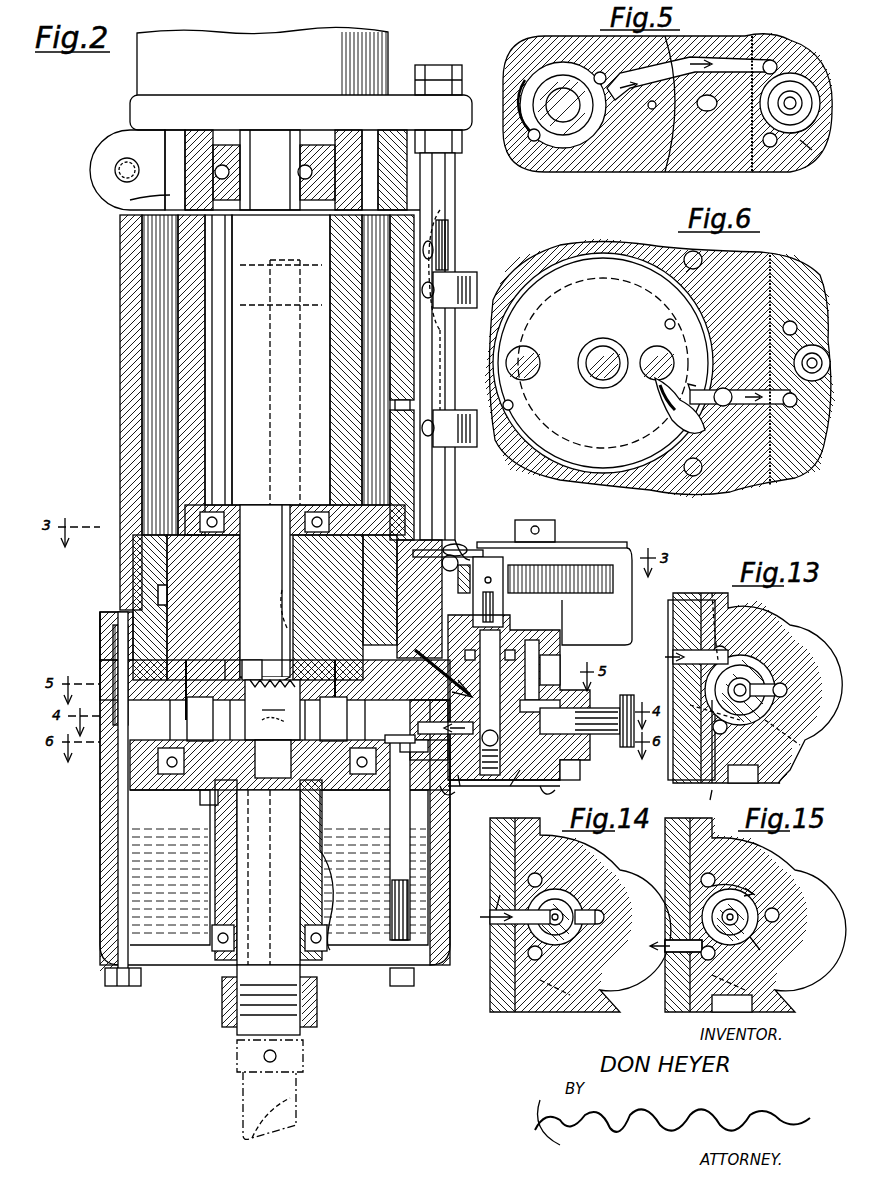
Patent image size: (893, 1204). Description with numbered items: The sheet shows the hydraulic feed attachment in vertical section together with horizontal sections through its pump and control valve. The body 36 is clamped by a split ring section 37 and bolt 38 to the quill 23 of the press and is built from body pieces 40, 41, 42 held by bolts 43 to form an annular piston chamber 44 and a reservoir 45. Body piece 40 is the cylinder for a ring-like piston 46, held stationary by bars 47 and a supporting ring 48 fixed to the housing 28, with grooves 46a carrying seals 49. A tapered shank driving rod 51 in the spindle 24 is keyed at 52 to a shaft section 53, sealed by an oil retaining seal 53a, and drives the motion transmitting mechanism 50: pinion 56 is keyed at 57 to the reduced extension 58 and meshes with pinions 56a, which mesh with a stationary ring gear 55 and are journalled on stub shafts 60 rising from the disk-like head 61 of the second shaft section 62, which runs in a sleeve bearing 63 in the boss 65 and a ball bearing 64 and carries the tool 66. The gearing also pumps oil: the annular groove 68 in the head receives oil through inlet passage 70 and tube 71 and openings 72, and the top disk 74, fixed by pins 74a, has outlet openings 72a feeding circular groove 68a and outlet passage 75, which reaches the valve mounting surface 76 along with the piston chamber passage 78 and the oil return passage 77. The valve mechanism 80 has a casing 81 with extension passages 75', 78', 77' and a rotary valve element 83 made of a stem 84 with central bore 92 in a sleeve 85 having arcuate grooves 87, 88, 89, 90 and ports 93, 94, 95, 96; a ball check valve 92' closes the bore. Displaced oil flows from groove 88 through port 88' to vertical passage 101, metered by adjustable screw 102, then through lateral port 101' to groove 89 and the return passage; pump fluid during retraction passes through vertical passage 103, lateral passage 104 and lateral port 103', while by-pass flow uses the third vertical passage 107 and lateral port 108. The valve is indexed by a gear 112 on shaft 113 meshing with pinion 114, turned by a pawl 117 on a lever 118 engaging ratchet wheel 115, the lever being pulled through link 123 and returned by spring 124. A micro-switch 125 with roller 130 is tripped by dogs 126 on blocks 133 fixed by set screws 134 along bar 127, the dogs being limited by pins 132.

In FIG. 2, the carrier or quill 23 is at (95, 146).
In FIG. 2, the spindle 24 is at (246, 249).
In FIG. 2, the housing 28 is at (382, 44).
In FIG. 2, the body 36 is at (115, 348).
In FIG. 2, the split ring section 37 is at (168, 195).
In FIG. 2, the bolt 38 is at (125, 170).
In FIG. 2, the body piece 40 is at (125, 448).
In FIG. 2, the body piece 41 is at (208, 594).
In FIG. 2, the body piece 42 is at (105, 795).
In FIG. 2, the bolts 43 is at (120, 852).
In FIG. 6, the bolts 43 is at (700, 256).
In FIG. 2, the annular piston chamber 44 is at (150, 400).
In FIG. 2, the reservoir 45 is at (170, 867).
In FIG. 2, the ring-like piston 46 is at (145, 568).
In FIG. 2, the grooves 46a is at (158, 590).
In FIG. 2, the bars 47 is at (400, 490).
In FIG. 2, the supporting ring 48 is at (140, 110).
In FIG. 2, the seals 49 is at (375, 632).
In FIG. 2, the motion transmitting mechanism 50 is at (226, 664).
In FIG. 2, the tapered shank driving rod 51 is at (268, 554).
In FIG. 2, the key 52 is at (282, 608).
In FIG. 2, the shaft section 53 is at (300, 602).
In FIG. 2, the oil retaining seal 53a is at (315, 520).
In FIG. 2, the internal ring gear 55 is at (134, 675).
In FIG. 2, the pinion 56 is at (272, 710).
In FIG. 5, the pinions 56a is at (522, 92).
In FIG. 2, the key 57 is at (273, 721).
In FIG. 2, the reduced extension 58 is at (280, 759).
In FIG. 5, the reduced extension 58 is at (552, 92).
In FIG. 6, the reduced extension 58 is at (600, 375).
In FIG. 2, the stub shafts 60 is at (267, 719).
In FIG. 6, the stub shafts 60 is at (530, 345).
In FIG. 2, the disk-like head 61 is at (210, 796).
In FIG. 6, the disk-like head 61 is at (598, 321).
In FIG. 2, the second shaft section 62 is at (232, 812).
In FIG. 2, the sleeve bearing 63 is at (310, 824).
In FIG. 2, the ball bearing 64 is at (345, 870).
In FIG. 2, the boss 65 is at (220, 893).
In FIG. 2, the drill or other tool 66 is at (243, 1092).
In FIG. 2, the annular groove 68 is at (160, 750).
In FIG. 6, the annular groove 68 is at (680, 420).
In FIG. 2, the circular groove 68a is at (246, 662).
In FIG. 5, the circular groove 68a is at (650, 78).
In FIG. 2, the inlet passage 70 is at (409, 733).
In FIG. 6, the inlet passage 70 is at (700, 394).
In FIG. 2, the tube 71 is at (396, 856).
In FIG. 6, the openings 72 is at (665, 325).
In FIG. 5, the outlet openings 72a is at (598, 72).
In FIG. 2, the top plate or disk 74 is at (335, 668).
In FIG. 5, the top plate or disk 74 is at (640, 170).
In FIG. 2, the pins 74a is at (186, 660).
In FIG. 5, the pins 74a is at (653, 111).
In FIG. 2, the outlet passage 75 is at (556, 660).
In FIG. 13, the outlet passage 75 is at (686, 644).
In FIG. 13, the extension passage 75' is at (703, 617).
In FIG. 5, the valve mounting surface 76 is at (752, 44).
In FIG. 6, the valve mounting surface 76 is at (771, 262).
In FIG. 2, the oil return passage 77 is at (429, 840).
In FIG. 6, the oil return passage 77 is at (738, 384).
In FIG. 15, the oil return passage 77 is at (669, 965).
In FIG. 15, the extension passage 77' is at (671, 927).
In FIG. 2, the passage 78 is at (436, 678).
In FIG. 5, the passage 78 is at (707, 113).
In FIG. 14, the passage 78 is at (505, 926).
In FIG. 14, the extension passage 78' is at (483, 897).
In FIG. 2, the valve mechanism 80 is at (572, 664).
In FIG. 2, the casing 81 is at (548, 660).
In FIG. 13, the casing 81 is at (790, 715).
In FIG. 15, the casing 81 is at (770, 870).
In FIG. 2, the tubular rotary valve element 83 is at (532, 640).
In FIG. 5, the tubular rotary valve element 83 is at (808, 78).
In FIG. 6, the tubular rotary valve element 83 is at (815, 345).
In FIG. 2, the stem 84 is at (492, 612).
In FIG. 5, the stem 84 is at (806, 135).
In FIG. 2, the sleeve 85 is at (456, 794).
In FIG. 5, the sleeve 85 is at (813, 164).
In FIG. 2, the arcuate groove 87 is at (490, 645).
In FIG. 13, the arcuate groove 87 is at (750, 710).
In FIG. 2, the arcuate groove 88 is at (444, 725).
In FIG. 14, the arcuate groove 88 is at (590, 935).
In FIG. 2, the port 88' is at (572, 684).
In FIG. 14, the port 88' is at (553, 962).
In FIG. 15, the arcuate groove 89 is at (760, 946).
In FIG. 14, the arcuate groove 90 is at (585, 885).
In FIG. 2, the central bore 92 is at (490, 702).
In FIG. 5, the central bore 92 is at (808, 83).
In FIG. 13, the central bore 92 is at (761, 667).
In FIG. 2, the spring loaded ball check valve 92' is at (519, 786).
In FIG. 13, the spring loaded ball check valve 92' is at (747, 772).
In FIG. 13, the port 93 is at (710, 718).
In FIG. 13, the port 94 is at (780, 680).
In FIG. 2, the ports 95 is at (489, 734).
In FIG. 14, the ports 95 is at (560, 900).
In FIG. 2, the port 96 is at (479, 789).
In FIG. 15, the port 96 is at (716, 950).
In FIG. 2, the vertical passage 101 is at (527, 772).
In FIG. 5, the vertical passage 101 is at (779, 160).
In FIG. 6, the vertical passage 101 is at (807, 429).
In FIG. 13, the vertical passage 101 is at (721, 751).
In FIG. 14, the vertical passage 101 is at (515, 984).
In FIG. 15, the vertical passage 101 is at (691, 991).
In FIG. 2, the lateral port 101' is at (559, 794).
In FIG. 15, the lateral port 101' is at (737, 1003).
In FIG. 2, the adjustable screw 102 is at (628, 696).
In FIG. 5, the vertical passage 103 is at (788, 45).
In FIG. 6, the vertical passage 103 is at (809, 304).
In FIG. 13, the vertical passage 103 is at (742, 626).
In FIG. 14, the vertical passage 103 is at (541, 867).
In FIG. 15, the vertical passage 103 is at (723, 867).
In FIG. 13, the lateral port 103' is at (762, 663).
In FIG. 15, the lateral passage 104 is at (722, 890).
In FIG. 13, the third vertical passage 107 is at (786, 685).
In FIG. 14, the third vertical passage 107 is at (603, 905).
In FIG. 15, the third vertical passage 107 is at (780, 910).
In FIG. 15, the lateral port 108 is at (765, 900).
In FIG. 2, the gear 112 is at (614, 580).
In FIG. 2, the shaft 113 is at (556, 529).
In FIG. 2, the pinion 114 is at (458, 592).
In FIG. 2, the ratchet wheel 115 is at (600, 556).
In FIG. 2, the pawl 117 is at (480, 552).
In FIG. 2, the lever 118 is at (456, 543).
In FIG. 2, the link 123 is at (452, 520).
In FIG. 2, the spring 124 is at (438, 570).
In FIG. 2, the micro-switch 125 is at (450, 365).
In FIG. 2, the dogs 126 is at (440, 262).
In FIG. 2, the bar 127 is at (450, 233).
In FIG. 2, the roller 130 is at (445, 208).
In FIG. 2, the pins 132 is at (450, 338).
In FIG. 2, the blocks 133 is at (470, 310).
In FIG. 2, the set screws 134 is at (458, 274).